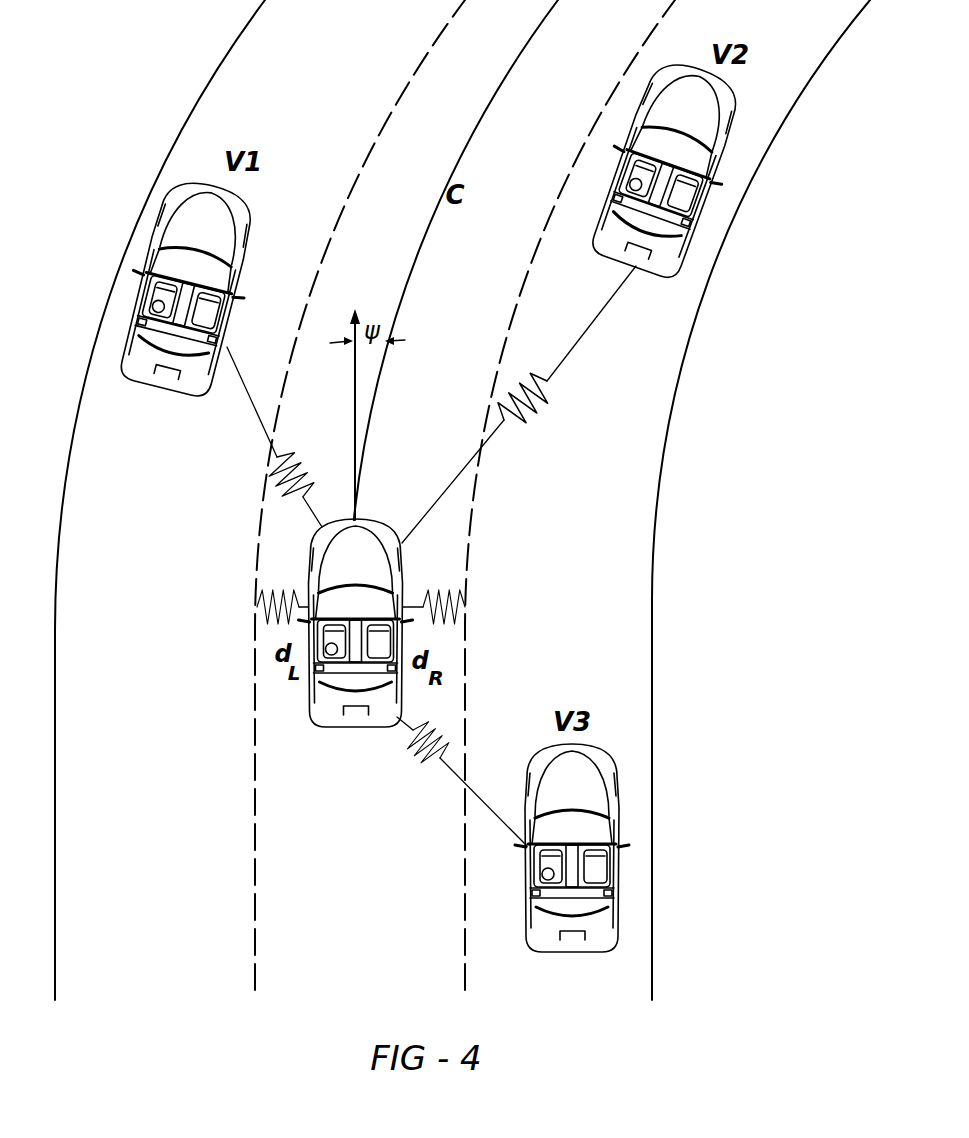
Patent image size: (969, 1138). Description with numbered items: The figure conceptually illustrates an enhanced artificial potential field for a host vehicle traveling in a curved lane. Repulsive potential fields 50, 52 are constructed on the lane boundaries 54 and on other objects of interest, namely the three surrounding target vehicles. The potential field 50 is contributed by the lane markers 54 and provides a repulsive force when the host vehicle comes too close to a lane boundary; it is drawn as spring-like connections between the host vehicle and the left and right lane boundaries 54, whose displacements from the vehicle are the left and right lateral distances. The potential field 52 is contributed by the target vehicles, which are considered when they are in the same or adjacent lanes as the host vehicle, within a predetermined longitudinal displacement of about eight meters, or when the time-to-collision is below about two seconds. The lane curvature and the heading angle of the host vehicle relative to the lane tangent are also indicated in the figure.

The repulsive potential field 50 is at (283, 590).
The potential field 52 is at (285, 483).
The lane boundaries 54 is at (255, 773).